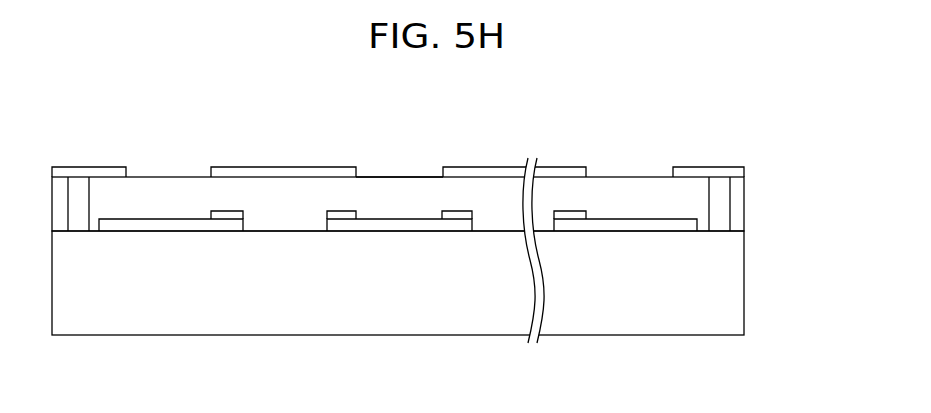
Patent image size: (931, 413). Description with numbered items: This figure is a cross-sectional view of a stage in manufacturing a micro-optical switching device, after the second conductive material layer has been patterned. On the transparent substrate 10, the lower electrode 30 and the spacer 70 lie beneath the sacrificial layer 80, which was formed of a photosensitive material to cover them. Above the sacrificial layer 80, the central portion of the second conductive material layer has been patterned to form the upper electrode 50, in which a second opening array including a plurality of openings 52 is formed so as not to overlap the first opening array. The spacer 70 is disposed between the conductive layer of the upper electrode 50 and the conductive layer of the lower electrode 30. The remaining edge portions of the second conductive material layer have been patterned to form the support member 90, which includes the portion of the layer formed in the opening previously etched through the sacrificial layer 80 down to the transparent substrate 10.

The transparent substrate 10 is at (740, 285).
The lower electrode 30 is at (646, 222).
The upper electrode 50 is at (473, 172).
The opening 52 is at (400, 163).
The spacer 70 is at (570, 211).
The sacrificial layer 80 is at (740, 201).
The support member 90 is at (740, 173).